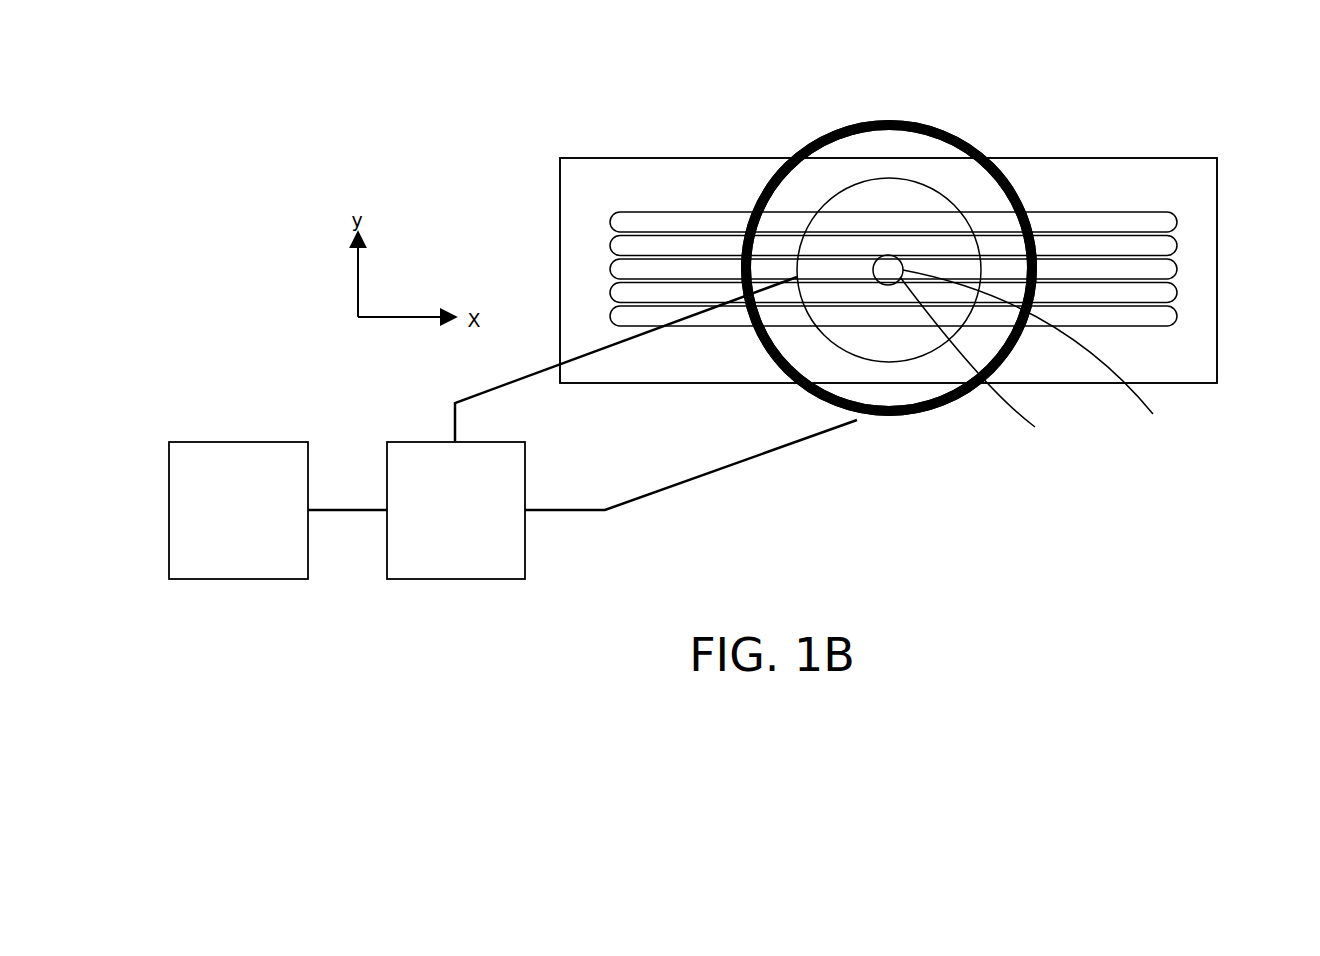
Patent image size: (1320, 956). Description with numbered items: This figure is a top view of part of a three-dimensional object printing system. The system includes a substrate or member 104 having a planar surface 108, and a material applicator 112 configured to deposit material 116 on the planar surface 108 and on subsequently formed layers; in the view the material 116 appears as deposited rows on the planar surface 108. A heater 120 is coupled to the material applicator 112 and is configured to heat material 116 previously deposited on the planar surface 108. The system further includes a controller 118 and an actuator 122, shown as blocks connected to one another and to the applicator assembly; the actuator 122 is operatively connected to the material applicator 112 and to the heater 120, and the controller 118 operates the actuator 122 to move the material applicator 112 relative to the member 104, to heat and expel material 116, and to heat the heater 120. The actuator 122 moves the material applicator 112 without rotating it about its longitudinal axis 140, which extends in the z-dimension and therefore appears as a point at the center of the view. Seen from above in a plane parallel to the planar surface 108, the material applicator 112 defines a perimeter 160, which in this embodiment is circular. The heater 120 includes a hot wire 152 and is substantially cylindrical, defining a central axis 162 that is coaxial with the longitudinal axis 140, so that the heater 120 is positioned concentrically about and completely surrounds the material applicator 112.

The member 104 is at (1202, 294).
The planar surface 108 is at (1201, 189).
The material applicator 112 is at (819, 177).
The material 116 is at (658, 212).
The controller 118 is at (239, 442).
The heater 120 is at (955, 125).
The actuator 122 is at (525, 542).
The longitudinal axis 140 is at (1049, 350).
The hot wire 152 is at (1003, 172).
The perimeter 160 is at (807, 312).
The central axis 162 is at (986, 360).